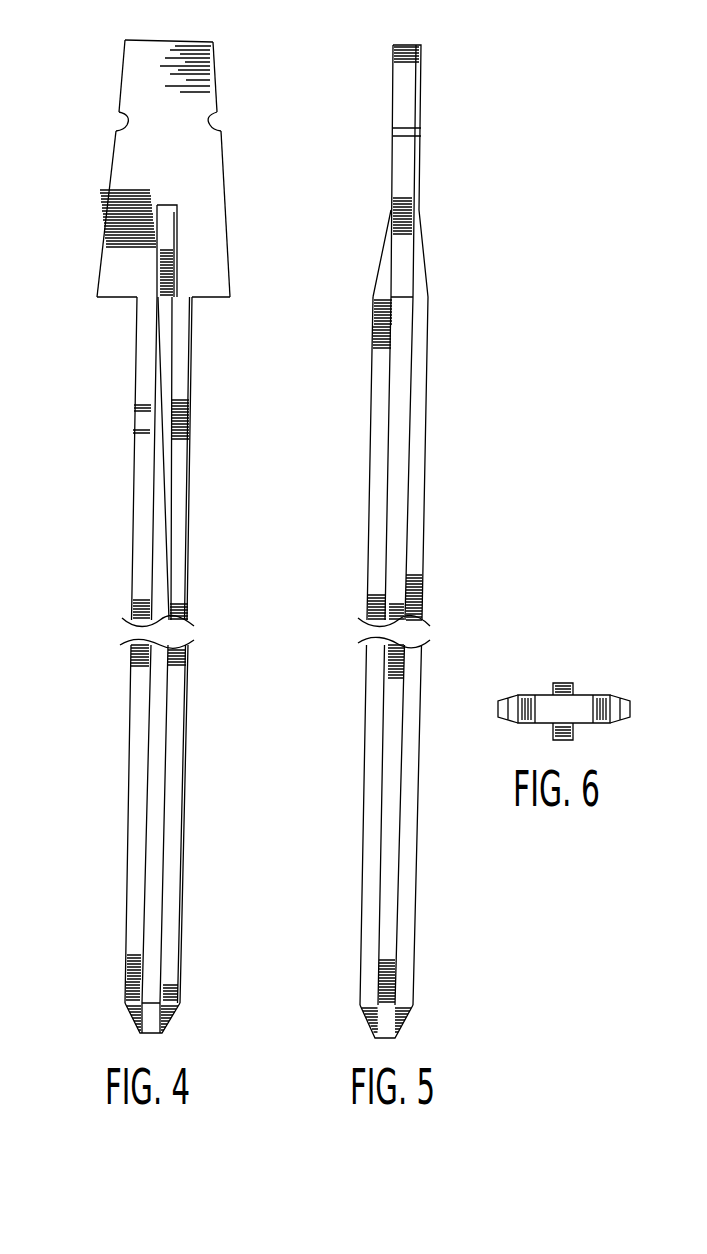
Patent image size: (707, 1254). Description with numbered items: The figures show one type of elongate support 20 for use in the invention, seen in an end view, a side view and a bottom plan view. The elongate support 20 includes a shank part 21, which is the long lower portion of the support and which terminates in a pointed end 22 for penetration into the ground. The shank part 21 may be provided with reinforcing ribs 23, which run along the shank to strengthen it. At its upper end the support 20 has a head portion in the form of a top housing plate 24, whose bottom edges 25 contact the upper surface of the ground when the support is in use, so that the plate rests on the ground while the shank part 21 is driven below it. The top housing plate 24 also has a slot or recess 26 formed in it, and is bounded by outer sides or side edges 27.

In FIG. 4, the elongate support 20 is at (88, 262).
In FIG. 5, the elongate support 20 is at (364, 276).
In FIG. 4, the shank part 21 is at (123, 565).
In FIG. 5, the shank part 21 is at (360, 567).
In FIG. 4, the pointed end 22 is at (178, 1015).
In FIG. 5, the pointed end 22 is at (405, 1021).
In FIG. 4, the reinforcing ribs 23 is at (162, 372).
In FIG. 5, the reinforcing ribs 23 is at (404, 385).
In FIG. 4, the top housing plate 24 is at (161, 191).
In FIG. 5, the top housing plate 24 is at (391, 172).
In FIG. 4, the bottom edges 25 is at (119, 299).
In FIG. 4, the slot or recess 26 is at (118, 121).
In FIG. 5, the slot or recess 26 is at (422, 133).
In FIG. 4, the outer sides or side edges 27 is at (108, 190).